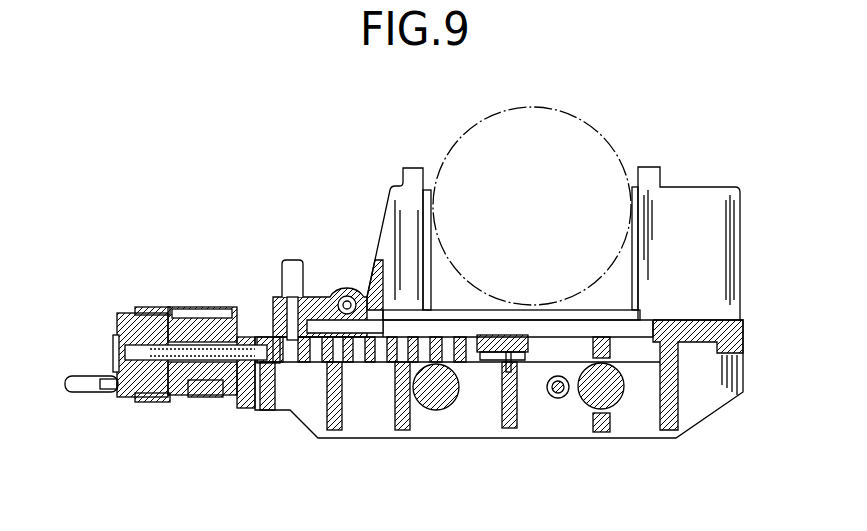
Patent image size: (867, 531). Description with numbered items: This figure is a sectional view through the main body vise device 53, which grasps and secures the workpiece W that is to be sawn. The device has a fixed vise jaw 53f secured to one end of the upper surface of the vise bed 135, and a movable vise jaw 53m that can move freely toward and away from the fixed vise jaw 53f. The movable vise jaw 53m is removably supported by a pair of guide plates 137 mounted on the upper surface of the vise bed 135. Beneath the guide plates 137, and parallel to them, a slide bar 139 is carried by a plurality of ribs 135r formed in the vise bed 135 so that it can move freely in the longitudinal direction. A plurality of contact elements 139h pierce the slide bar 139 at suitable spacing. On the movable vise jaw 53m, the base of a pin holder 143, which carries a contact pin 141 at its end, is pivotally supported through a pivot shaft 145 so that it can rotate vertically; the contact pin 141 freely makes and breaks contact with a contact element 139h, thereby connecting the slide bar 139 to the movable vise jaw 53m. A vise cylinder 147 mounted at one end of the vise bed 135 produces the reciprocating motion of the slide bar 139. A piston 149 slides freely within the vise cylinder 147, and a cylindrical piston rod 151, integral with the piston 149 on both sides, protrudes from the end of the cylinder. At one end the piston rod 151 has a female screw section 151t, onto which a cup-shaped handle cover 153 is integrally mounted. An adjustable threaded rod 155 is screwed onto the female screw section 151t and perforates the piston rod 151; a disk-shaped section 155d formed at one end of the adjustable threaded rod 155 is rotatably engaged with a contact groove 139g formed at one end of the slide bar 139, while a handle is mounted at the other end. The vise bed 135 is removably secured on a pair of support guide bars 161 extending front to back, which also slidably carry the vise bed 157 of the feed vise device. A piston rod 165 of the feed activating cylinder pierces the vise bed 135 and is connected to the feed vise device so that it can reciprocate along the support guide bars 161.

The workpiece W is at (568, 112).
The main body vise device 53 is at (318, 193).
The movable vise jaw 53m is at (390, 192).
The fixed vise jaw 53f is at (688, 192).
The vise bed 135 is at (652, 422).
The ribs 135r is at (342, 430).
The guide plates 137 is at (598, 312).
The slide bar 139 is at (477, 368).
The contact groove 139g is at (268, 365).
The contact elements 139h is at (313, 360).
The contact pin 141 is at (284, 300).
The pin holder 143 is at (308, 297).
The pivot shaft 145 is at (347, 295).
The vise cylinder 147 is at (207, 306).
The piston 149 is at (205, 398).
The piston rod 151 is at (248, 333).
The female screw section 151t is at (155, 312).
The handle cover 153 is at (158, 403).
The adjustable threaded rod 155 is at (135, 320).
The disk-shaped section 155d is at (268, 343).
The vise bed 157 is at (97, 393).
The support guide bars 161 is at (440, 400).
The piston rod 165 is at (558, 398).